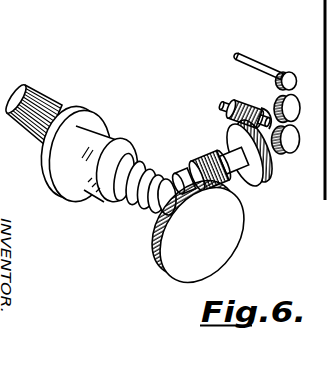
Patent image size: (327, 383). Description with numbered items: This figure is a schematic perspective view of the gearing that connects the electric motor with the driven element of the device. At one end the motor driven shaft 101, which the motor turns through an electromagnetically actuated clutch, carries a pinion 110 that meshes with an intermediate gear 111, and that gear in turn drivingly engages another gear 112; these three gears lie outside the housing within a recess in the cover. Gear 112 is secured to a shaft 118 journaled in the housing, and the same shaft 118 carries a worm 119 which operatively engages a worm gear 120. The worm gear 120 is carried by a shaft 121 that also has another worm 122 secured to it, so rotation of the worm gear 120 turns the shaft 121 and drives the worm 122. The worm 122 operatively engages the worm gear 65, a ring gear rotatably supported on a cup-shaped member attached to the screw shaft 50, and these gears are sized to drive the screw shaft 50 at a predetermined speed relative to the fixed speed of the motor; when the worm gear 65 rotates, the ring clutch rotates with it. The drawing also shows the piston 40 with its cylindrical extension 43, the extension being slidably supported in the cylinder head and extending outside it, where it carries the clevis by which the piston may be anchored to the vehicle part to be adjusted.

The piston 40 is at (53, 167).
The cylindrical extension 43 is at (43, 102).
The screw shaft 50 is at (155, 206).
The worm gear 65 is at (250, 232).
The motor driven shaft 101 is at (266, 36).
The pinion 110 is at (287, 72).
The intermediate gear 111 is at (280, 96).
The gear 112 is at (290, 146).
The shaft 118 is at (267, 110).
The worm 119 is at (223, 104).
The worm gear 120 is at (231, 134).
The shaft 121 is at (236, 158).
The worm 122 is at (205, 157).